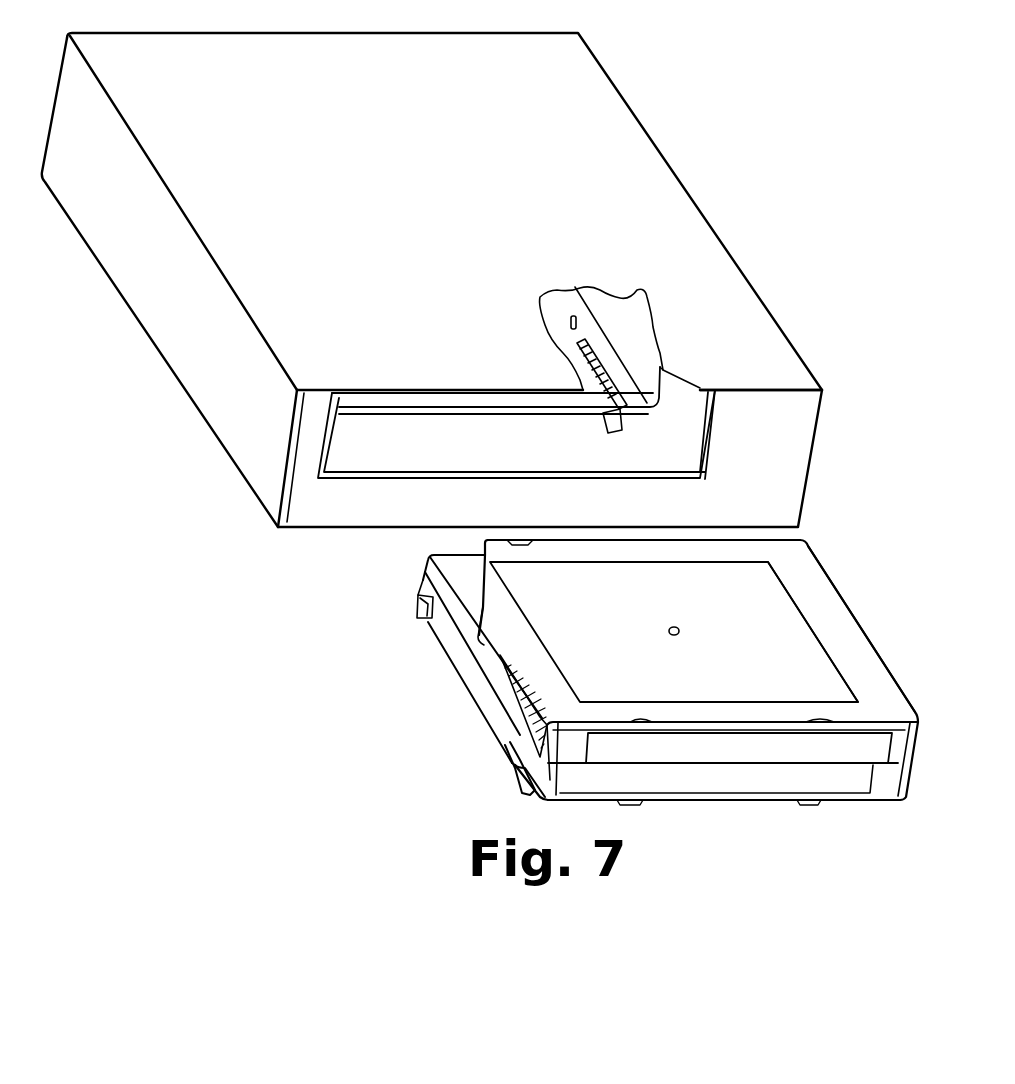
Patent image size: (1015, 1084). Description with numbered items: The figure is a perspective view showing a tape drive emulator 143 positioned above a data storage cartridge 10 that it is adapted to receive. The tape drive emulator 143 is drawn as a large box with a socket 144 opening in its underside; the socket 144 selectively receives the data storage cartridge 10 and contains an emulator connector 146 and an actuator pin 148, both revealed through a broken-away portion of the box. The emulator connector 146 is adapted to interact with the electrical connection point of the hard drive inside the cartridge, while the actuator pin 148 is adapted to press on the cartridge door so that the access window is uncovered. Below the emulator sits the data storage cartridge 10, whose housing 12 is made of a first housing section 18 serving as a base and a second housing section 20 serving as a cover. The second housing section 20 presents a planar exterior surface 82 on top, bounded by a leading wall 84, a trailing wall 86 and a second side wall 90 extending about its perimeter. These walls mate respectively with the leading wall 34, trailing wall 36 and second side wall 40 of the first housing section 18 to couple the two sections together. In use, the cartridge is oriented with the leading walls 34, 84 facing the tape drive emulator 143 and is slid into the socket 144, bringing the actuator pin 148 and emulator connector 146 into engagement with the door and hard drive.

The tape drive emulator 143 is at (758, 233).
The socket 144 is at (715, 430).
The emulator connector 146 is at (615, 380).
The actuator pin 148 is at (577, 323).
The data storage cartridge 10 is at (880, 576).
The housing 12 is at (812, 556).
The second housing section 20 is at (890, 686).
The exterior surface 82 is at (860, 648).
The trailing wall 86 is at (902, 742).
The first housing section 18 is at (888, 789).
The trailing wall 36 is at (875, 797).
The second side wall 40 is at (483, 705).
The leading wall 84 is at (430, 556).
The leading wall 34 is at (420, 598).
The second side wall 90 is at (490, 658).